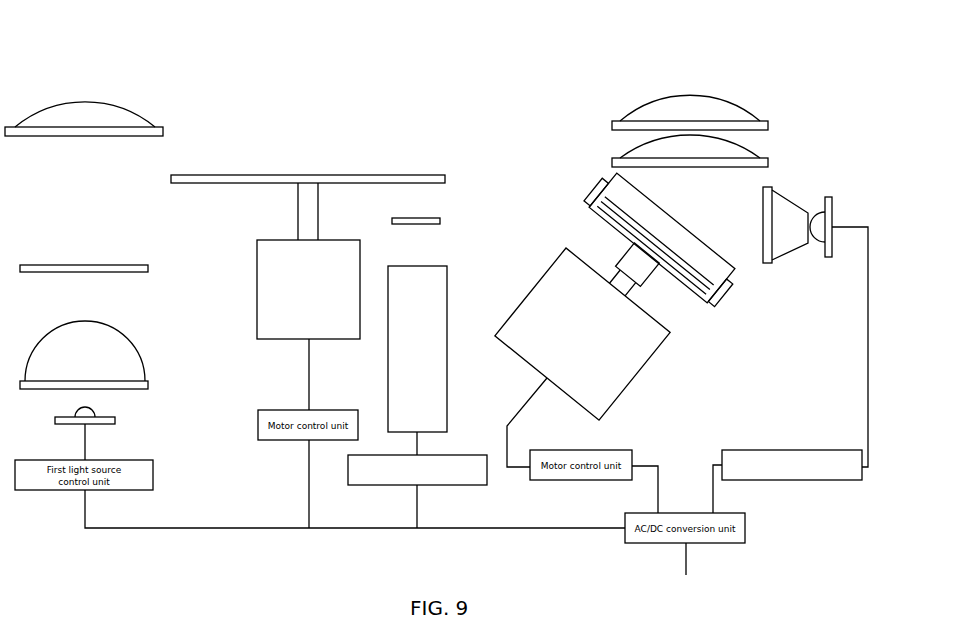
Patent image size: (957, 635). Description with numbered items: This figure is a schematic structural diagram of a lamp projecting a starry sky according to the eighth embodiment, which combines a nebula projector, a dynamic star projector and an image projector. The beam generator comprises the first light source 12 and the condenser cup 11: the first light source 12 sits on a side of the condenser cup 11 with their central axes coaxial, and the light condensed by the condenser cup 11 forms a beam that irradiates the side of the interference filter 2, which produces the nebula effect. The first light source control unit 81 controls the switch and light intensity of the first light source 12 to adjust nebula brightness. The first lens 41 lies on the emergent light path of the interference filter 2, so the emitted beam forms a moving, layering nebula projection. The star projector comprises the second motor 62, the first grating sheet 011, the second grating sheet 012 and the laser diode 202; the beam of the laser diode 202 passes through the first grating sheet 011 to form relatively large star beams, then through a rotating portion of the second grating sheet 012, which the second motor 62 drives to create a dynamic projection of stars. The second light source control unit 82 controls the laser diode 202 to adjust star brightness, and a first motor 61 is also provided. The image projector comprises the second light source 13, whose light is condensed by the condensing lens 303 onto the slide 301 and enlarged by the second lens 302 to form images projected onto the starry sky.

The second lens 302 is at (110, 118).
The slide 301 is at (112, 268).
The condensing lens 303 is at (103, 361).
The second light source 13 is at (105, 420).
The second grating sheet 012 is at (370, 180).
The first grating sheet 011 is at (427, 220).
The second motor 62 is at (287, 297).
The laser diode 202 is at (425, 345).
The second light source control unit 82 is at (380, 485).
The first motor 61 is at (578, 317).
The interference filter 2 is at (687, 235).
The first lens 41 is at (727, 115).
The condenser cup 11 is at (795, 218).
The first light source 12 is at (827, 218).
The first light source control unit 81 is at (790, 450).